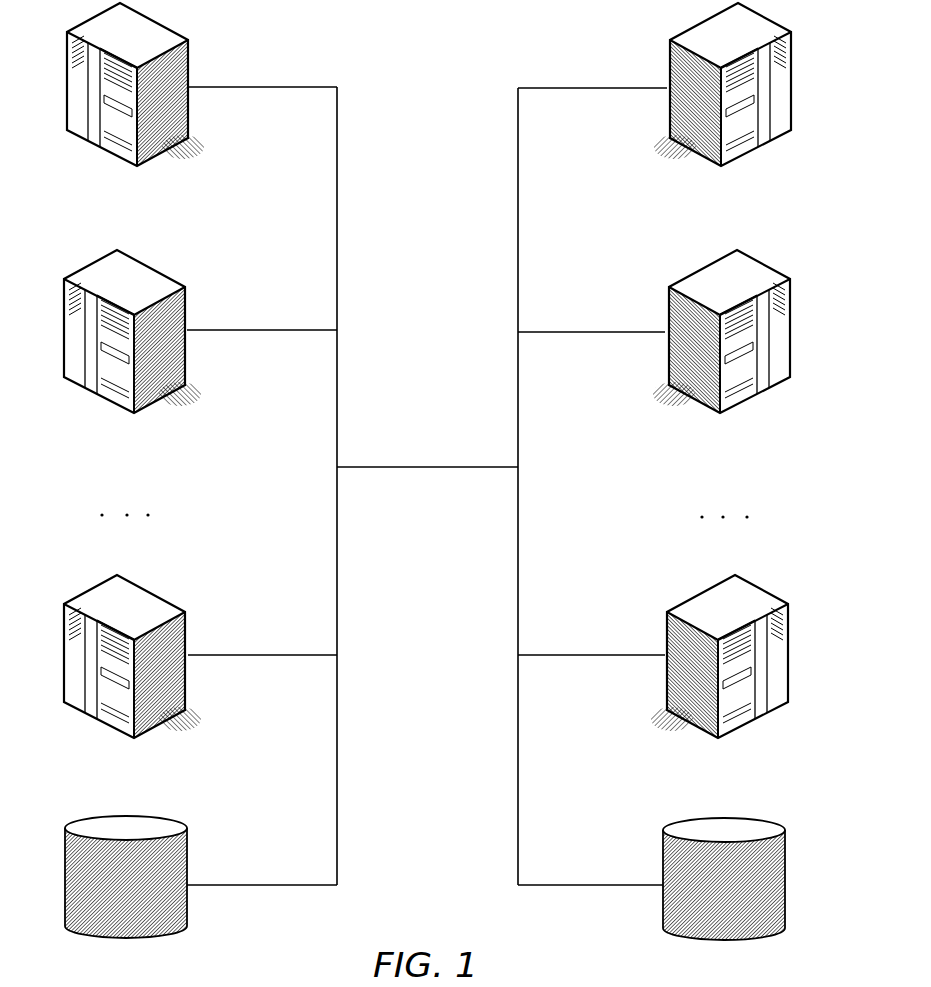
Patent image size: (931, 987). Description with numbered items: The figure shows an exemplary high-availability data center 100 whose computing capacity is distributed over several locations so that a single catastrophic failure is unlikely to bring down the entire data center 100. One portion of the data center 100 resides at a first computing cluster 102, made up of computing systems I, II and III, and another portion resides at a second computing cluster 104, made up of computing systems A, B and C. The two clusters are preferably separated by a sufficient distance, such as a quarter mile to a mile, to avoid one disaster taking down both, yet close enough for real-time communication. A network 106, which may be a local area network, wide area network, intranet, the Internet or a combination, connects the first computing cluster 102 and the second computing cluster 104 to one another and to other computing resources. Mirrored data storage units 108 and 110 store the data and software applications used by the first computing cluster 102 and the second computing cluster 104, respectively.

The data center 100 is at (448, 28).
The first computing cluster 102 is at (337, 167).
The second computing cluster 104 is at (520, 168).
The network 106 is at (400, 465).
The mirrored data storage unit 108 is at (158, 820).
The mirrored data storage unit 110 is at (693, 823).